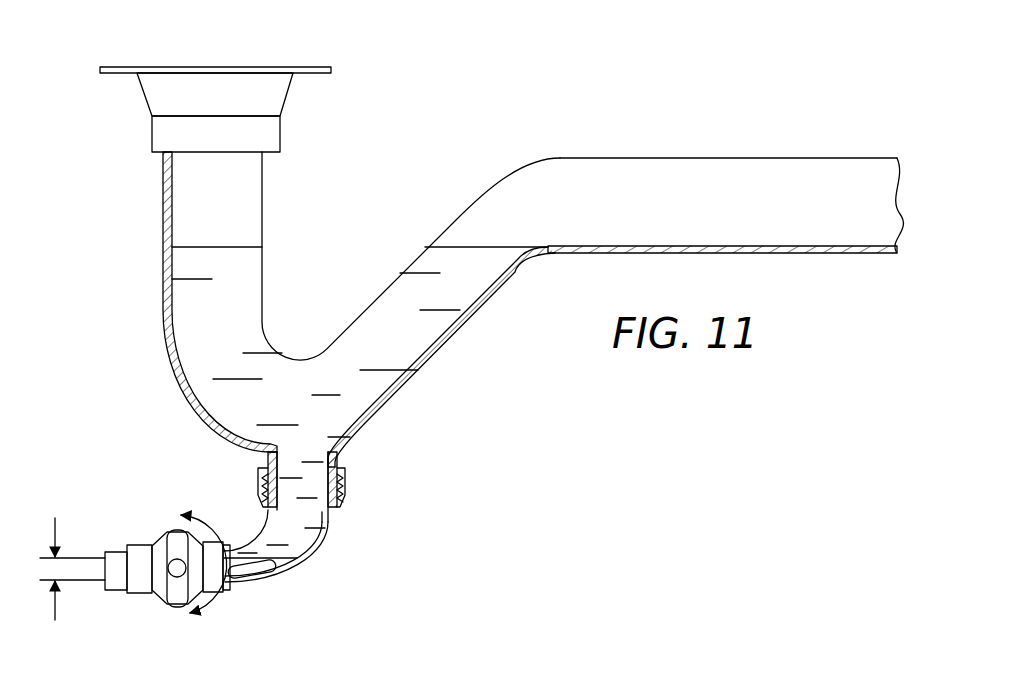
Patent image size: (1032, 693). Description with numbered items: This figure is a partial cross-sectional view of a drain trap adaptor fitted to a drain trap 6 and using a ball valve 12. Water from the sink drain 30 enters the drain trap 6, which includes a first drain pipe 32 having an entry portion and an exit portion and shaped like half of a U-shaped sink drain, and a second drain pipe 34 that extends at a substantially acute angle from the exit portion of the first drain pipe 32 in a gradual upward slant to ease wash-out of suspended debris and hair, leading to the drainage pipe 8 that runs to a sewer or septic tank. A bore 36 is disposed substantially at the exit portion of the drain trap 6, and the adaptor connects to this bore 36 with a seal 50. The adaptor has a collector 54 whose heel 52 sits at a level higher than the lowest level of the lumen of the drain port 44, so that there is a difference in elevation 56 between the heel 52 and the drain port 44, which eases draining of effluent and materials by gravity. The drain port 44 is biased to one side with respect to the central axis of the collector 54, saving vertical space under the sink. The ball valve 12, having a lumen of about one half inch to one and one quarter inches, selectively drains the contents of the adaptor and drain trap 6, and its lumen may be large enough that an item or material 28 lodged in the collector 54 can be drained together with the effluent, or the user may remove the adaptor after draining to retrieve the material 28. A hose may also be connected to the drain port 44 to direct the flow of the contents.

The sink drain 30 is at (216, 67).
The drain trap 6 is at (288, 221).
The first drain pipe 32 is at (265, 280).
The second drain pipe 34 is at (397, 277).
The drainage pipe leading to sewer or septic tank 8 is at (718, 158).
The bore 36 is at (340, 461).
The seal 50 is at (333, 537).
The heel of collector 52 is at (318, 533).
The collector 54 is at (305, 567).
The item or material to be captured and retrieved 28 is at (254, 573).
The drain port 44 is at (127, 547).
The ball valve 12 is at (165, 533).
The difference in height between heel of collector and lowest point of outlet end of 56 is at (57, 603).